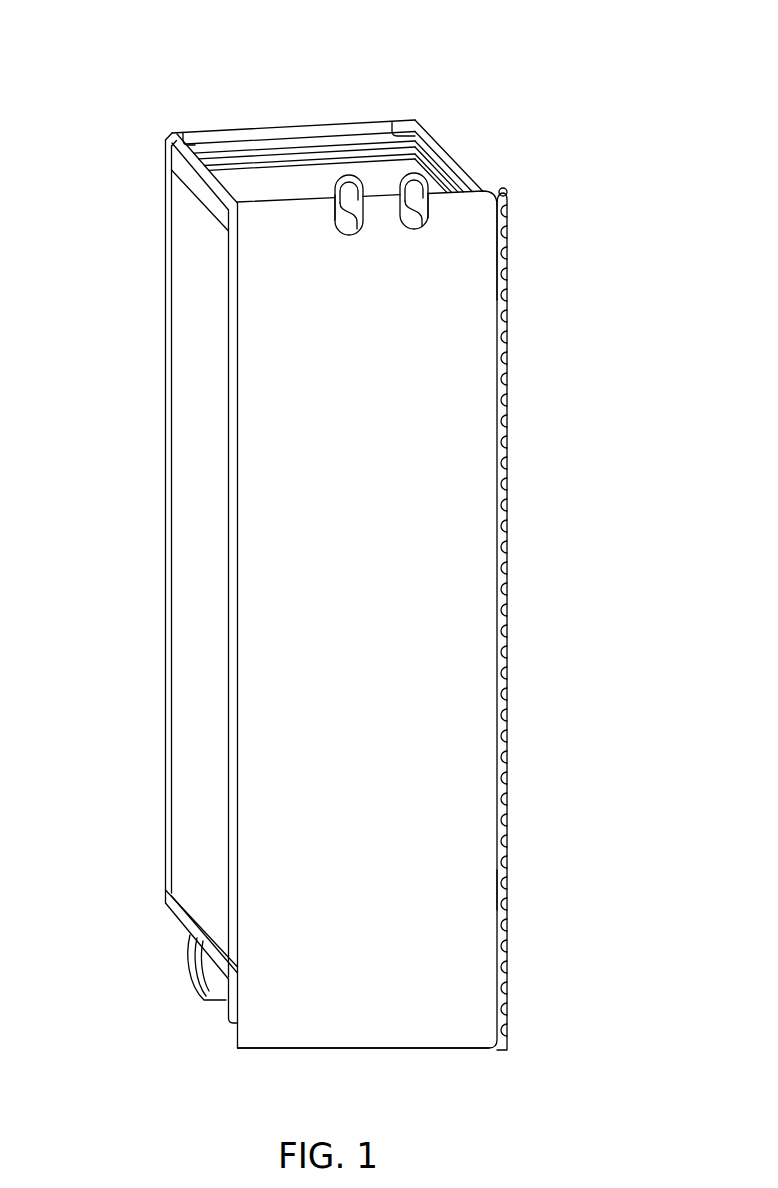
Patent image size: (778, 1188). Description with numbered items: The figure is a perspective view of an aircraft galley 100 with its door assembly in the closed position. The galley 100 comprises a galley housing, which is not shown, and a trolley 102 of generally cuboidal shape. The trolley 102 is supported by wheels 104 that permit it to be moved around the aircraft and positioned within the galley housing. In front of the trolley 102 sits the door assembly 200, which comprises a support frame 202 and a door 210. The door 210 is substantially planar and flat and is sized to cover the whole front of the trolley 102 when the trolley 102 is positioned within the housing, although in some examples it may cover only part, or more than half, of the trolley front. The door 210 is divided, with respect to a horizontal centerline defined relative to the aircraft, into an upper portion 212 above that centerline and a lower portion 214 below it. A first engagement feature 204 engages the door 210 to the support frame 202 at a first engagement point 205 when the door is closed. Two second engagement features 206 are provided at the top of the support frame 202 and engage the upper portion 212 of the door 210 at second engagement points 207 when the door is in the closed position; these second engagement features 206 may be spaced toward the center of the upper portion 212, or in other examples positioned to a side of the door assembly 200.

The aircraft galley 100 is at (535, 65).
The trolley 102 is at (197, 378).
The wheels 104 is at (196, 960).
The door assembly 200 is at (485, 213).
The support frame 202 is at (506, 632).
The first engagement feature 204 is at (507, 882).
The first engagement point 205 is at (497, 890).
The second engagement features 206 is at (413, 183).
The second engagement points 207 is at (337, 203).
The door 210 is at (436, 401).
The upper portion 212 is at (484, 250).
The lower portion 214 is at (507, 1017).